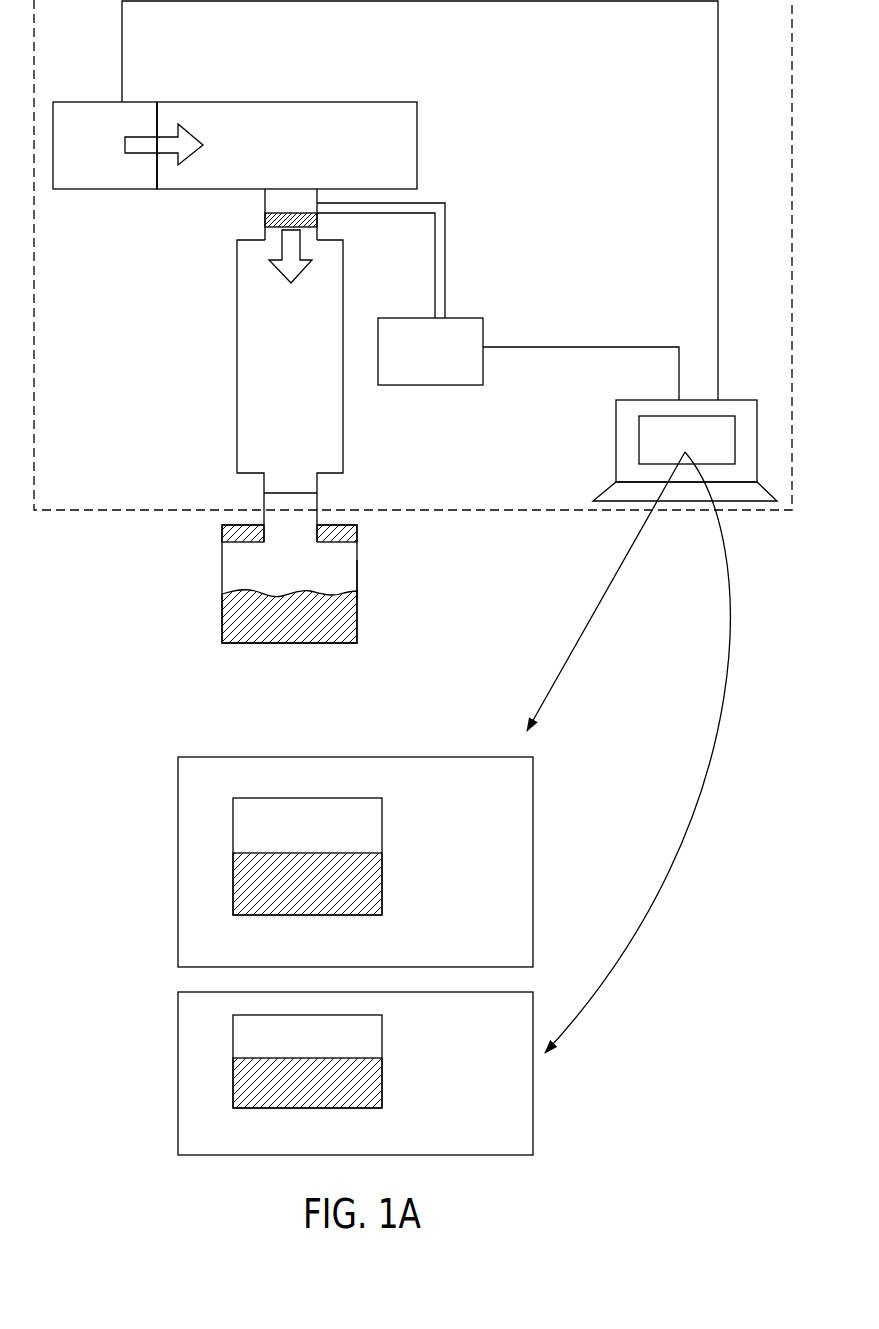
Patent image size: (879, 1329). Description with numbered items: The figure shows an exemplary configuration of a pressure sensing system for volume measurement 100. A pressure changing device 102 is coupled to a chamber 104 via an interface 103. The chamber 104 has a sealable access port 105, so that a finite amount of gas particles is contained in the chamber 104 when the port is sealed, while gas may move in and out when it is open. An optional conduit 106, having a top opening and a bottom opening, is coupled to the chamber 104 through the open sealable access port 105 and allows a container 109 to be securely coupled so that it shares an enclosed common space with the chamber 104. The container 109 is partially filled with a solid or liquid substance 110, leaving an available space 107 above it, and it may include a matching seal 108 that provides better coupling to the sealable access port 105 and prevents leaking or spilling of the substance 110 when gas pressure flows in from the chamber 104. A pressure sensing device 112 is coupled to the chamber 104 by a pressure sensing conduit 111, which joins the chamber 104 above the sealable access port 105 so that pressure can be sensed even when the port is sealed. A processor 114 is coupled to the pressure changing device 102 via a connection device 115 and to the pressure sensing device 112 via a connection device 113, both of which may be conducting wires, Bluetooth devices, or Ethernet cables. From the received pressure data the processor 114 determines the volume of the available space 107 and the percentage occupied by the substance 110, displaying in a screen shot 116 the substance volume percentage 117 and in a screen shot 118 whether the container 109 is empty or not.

The pressure sensing system for volume measurement 100 is at (78, 514).
The pressure changing device 102 is at (92, 112).
The interface 103 is at (158, 118).
The chamber 104 is at (367, 112).
The sealable access port 105 is at (268, 218).
The optional conduit 106 is at (250, 360).
The available space 107 is at (235, 573).
The matching seal 108 is at (350, 533).
The container 109 is at (357, 580).
The solid or liquid substance 110 is at (350, 620).
The pressure sensing conduit 111 is at (437, 203).
The pressure sensing device 112 is at (460, 330).
The connection device 113 is at (627, 345).
The processor 114 is at (742, 405).
The connection device 115 is at (718, 33).
The screen shot 116 is at (533, 787).
The substance volume percentage 117 is at (522, 860).
The screen shot 118 is at (533, 1078).